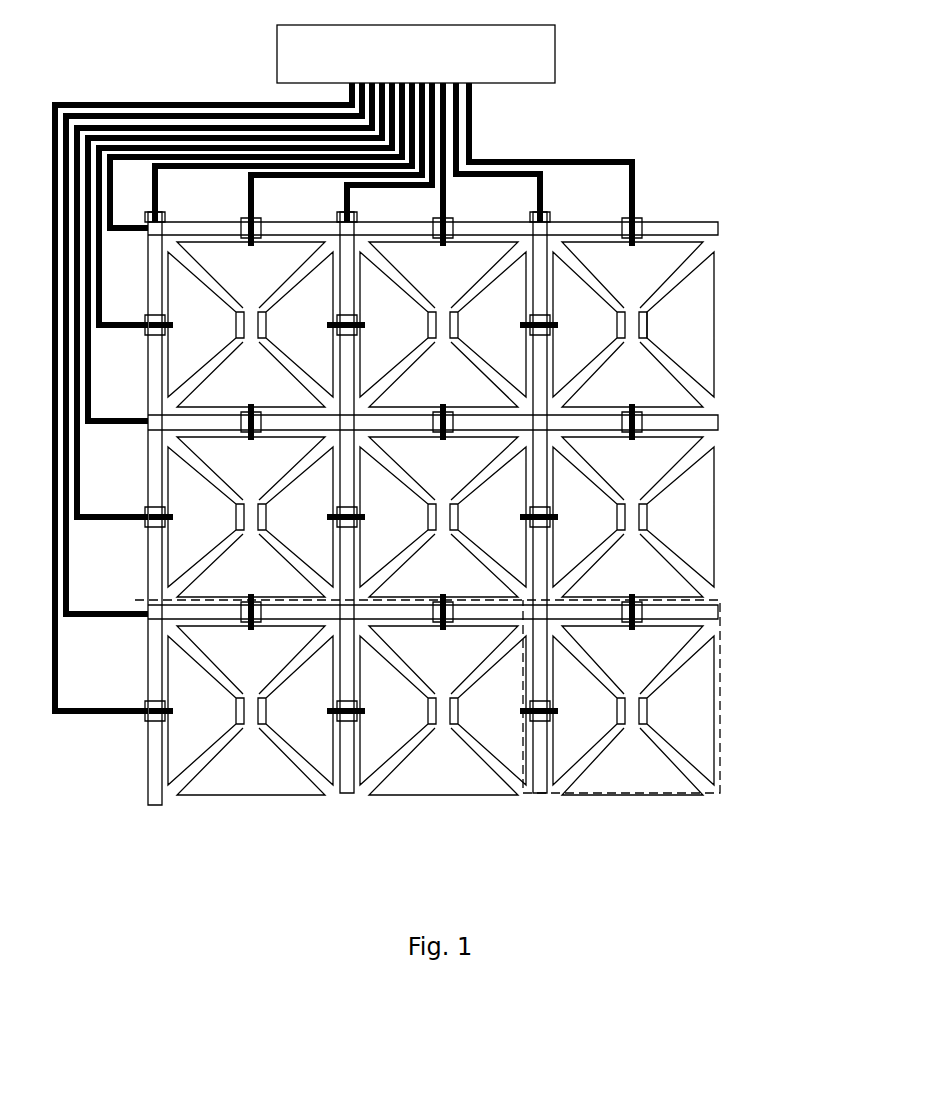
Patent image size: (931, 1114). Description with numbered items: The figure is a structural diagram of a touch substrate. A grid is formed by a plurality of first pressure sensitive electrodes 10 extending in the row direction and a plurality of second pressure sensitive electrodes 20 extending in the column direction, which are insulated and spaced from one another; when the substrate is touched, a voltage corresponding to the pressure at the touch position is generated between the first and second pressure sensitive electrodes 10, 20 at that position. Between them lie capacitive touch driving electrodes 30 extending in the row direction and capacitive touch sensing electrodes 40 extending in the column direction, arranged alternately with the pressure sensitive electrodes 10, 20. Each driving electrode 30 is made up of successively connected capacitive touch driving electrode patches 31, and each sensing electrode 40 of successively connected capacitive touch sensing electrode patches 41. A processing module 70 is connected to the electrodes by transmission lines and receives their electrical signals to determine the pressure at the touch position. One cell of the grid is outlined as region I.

The processing module 70 is at (555, 55).
The capacitive touch sensing electrode patch 41 is at (653, 257).
The first pressure sensitive electrode 10 is at (732, 215).
The second pressure sensitive electrode 20 is at (153, 818).
The capacitive touch driving electrode 30 is at (491, 518).
The capacitive touch driving electrode patch 31 is at (703, 360).
The capacitive touch sensing electrode 40 is at (248, 815).
The unit region I is at (714, 722).